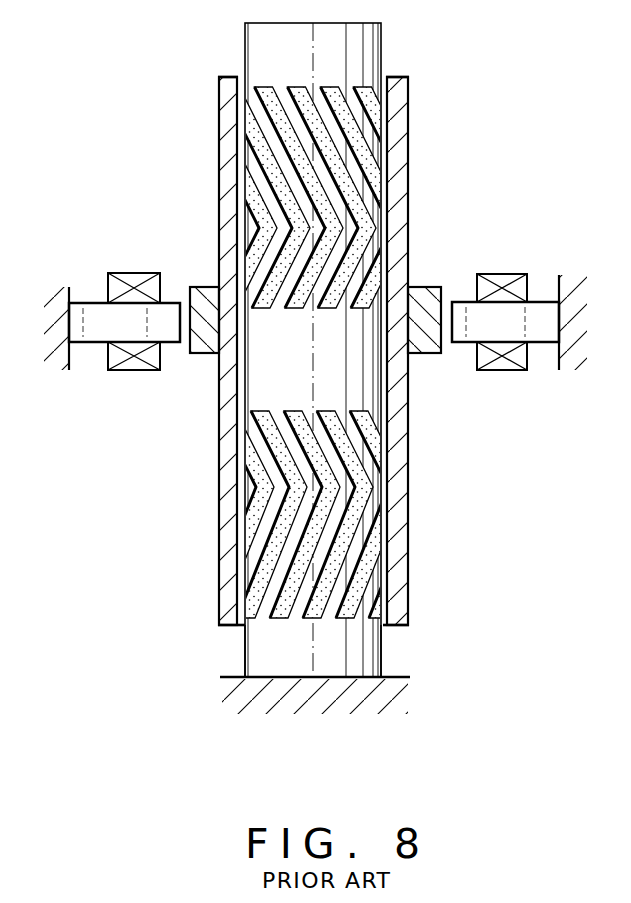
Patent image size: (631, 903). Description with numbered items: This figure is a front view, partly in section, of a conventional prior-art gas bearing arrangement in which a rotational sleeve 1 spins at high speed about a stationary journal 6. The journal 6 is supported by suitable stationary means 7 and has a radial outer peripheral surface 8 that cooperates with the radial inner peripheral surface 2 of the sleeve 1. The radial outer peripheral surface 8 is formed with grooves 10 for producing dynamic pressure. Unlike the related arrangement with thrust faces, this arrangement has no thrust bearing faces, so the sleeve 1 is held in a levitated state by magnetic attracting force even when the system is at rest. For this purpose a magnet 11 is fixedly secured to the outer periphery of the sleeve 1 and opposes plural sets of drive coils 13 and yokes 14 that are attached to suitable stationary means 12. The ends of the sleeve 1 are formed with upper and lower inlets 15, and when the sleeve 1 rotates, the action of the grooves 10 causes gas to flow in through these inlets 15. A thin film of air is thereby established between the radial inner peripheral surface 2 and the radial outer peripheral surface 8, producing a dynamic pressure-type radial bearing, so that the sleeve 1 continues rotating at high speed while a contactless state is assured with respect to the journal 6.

The sleeve 1 is at (409, 110).
The radial inner peripheral surface 2 is at (383, 162).
The journal 6 is at (386, 655).
The stationary means 7 is at (408, 705).
The radial outer peripheral surface 8 is at (240, 209).
The grooves 10 is at (253, 93).
The magnet 11 is at (203, 287).
The stationary means 12 is at (570, 282).
The drive coils 13 is at (128, 273).
The yokes 14 is at (95, 303).
The inlet 15 is at (387, 76).